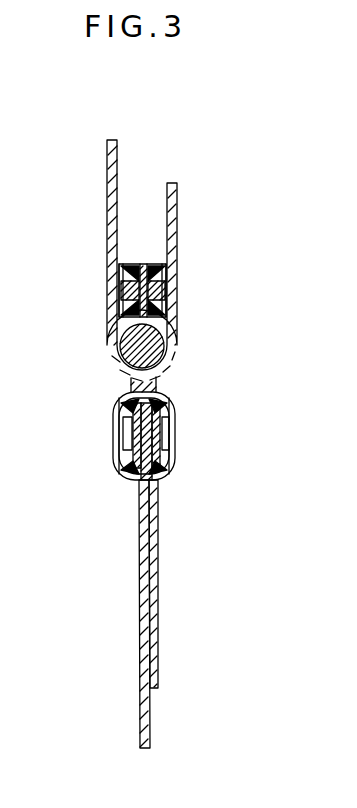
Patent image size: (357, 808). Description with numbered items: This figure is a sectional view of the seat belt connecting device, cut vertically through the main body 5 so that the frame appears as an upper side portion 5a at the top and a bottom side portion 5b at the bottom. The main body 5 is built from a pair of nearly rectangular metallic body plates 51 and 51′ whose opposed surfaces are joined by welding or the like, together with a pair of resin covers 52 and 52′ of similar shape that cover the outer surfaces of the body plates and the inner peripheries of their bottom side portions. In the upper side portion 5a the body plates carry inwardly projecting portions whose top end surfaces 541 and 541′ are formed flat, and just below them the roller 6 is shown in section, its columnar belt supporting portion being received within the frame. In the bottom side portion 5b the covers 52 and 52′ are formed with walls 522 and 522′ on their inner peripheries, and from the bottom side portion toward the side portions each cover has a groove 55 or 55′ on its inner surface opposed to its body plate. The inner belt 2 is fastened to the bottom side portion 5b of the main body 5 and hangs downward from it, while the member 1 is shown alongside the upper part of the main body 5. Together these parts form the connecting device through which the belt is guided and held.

The first member (plate with bent edge) 1 is at (180, 198).
The inner belt 2 is at (158, 628).
The main body 5 is at (177, 377).
The upper side portion 5a is at (142, 259).
The bottom side portion 5b is at (153, 480).
The body plate 51 is at (121, 261).
The body plate 51′ is at (173, 258).
The cover 52 is at (117, 295).
The cover 52′ is at (160, 300).
The top end surface 541 is at (115, 323).
The top end surface 541′ is at (168, 322).
The wall 522 is at (122, 400).
The wall 522′ is at (172, 407).
The groove 55 is at (124, 440).
The groove 55′ is at (171, 458).
The roller 6 is at (133, 348).